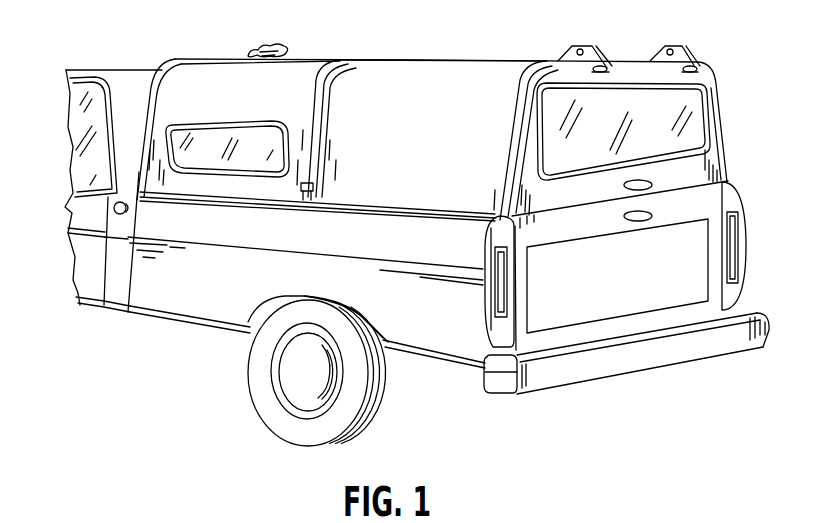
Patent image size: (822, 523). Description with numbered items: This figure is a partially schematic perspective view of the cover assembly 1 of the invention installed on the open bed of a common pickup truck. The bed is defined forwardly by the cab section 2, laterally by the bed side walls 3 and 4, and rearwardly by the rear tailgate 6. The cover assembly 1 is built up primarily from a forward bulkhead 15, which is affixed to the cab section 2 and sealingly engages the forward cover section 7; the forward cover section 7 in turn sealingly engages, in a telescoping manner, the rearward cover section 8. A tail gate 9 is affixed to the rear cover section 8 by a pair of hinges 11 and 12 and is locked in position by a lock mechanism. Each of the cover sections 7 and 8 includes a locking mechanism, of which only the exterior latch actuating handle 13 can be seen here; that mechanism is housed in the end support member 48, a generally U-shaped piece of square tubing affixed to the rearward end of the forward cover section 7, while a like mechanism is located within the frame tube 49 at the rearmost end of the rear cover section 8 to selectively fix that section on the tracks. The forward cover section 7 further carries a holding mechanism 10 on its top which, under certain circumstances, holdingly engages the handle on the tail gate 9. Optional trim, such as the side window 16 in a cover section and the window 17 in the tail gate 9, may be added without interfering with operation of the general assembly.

The cover assembly 1 is at (72, 38).
The cab section 2 is at (113, 72).
The bed side wall 3 is at (457, 325).
The bed side wall 4 is at (735, 200).
The rear tailgate 6 is at (657, 290).
The forward cover section 7 is at (217, 67).
The rearward cover section 8 is at (450, 66).
The tail gate 9 is at (622, 67).
The holding mechanism 10 is at (270, 44).
The hinge 11 is at (583, 43).
The hinge 12 is at (668, 43).
The exterior latch actuating handle 13 is at (318, 188).
The forward bulkhead 15 is at (167, 58).
The side window 16 is at (208, 136).
The window 17 is at (700, 138).
The end support member 48 is at (322, 104).
The frame tube 49 is at (508, 160).